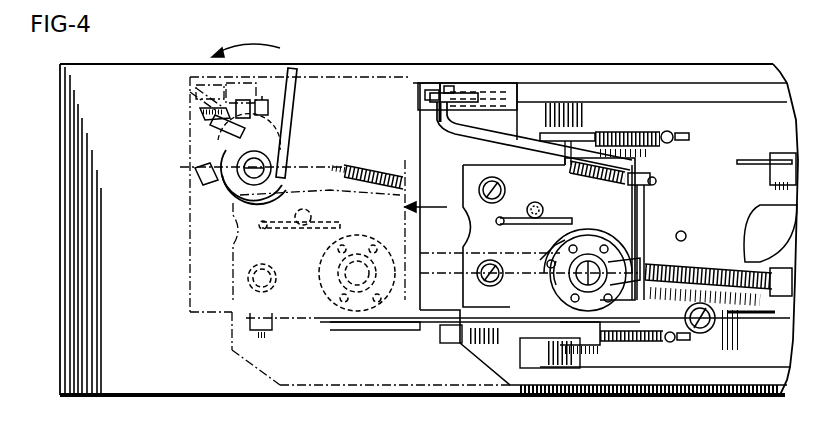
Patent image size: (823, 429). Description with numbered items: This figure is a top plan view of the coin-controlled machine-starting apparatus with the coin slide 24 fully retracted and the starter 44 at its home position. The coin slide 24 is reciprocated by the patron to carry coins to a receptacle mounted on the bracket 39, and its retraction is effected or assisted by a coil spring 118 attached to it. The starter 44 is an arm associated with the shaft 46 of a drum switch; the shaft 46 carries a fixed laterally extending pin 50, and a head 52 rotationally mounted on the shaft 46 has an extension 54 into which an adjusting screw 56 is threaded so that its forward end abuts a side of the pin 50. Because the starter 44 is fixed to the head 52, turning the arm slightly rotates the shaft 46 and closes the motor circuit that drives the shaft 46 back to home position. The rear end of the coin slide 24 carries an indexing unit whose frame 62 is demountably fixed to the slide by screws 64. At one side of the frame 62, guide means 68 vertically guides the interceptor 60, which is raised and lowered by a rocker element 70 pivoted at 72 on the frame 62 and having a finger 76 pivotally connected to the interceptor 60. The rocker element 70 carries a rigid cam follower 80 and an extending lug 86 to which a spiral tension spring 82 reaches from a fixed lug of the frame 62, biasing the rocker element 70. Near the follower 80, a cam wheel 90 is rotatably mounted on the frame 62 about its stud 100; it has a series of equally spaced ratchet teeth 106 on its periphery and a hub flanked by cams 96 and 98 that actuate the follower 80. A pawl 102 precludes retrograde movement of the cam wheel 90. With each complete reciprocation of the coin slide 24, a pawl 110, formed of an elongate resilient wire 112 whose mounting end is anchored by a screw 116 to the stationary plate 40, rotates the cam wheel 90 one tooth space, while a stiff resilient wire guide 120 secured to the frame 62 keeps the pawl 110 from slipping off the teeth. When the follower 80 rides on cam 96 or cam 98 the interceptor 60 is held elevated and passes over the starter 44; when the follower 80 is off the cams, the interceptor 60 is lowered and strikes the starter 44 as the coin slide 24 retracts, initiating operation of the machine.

The coin slide 24 is at (495, 365).
The bracket 39 is at (234, 386).
The plate 40 is at (722, 103).
The starter 44 is at (300, 72).
The shaft 46 is at (243, 178).
The pin 50 is at (262, 102).
The head 52 is at (247, 182).
The extension 54 is at (245, 102).
The adjusting screw 56 is at (245, 118).
The interceptor 60 is at (432, 90).
The frame 62 is at (420, 125).
The screws 64 is at (478, 189).
The guide means 68 is at (425, 95).
The rocker element 70 is at (520, 140).
The pivot 72 is at (676, 137).
The finger 76 is at (447, 86).
The cam follower 80 is at (645, 286).
The spiral tension spring 82 is at (368, 163).
The lug 86 is at (656, 181).
The cam wheel 90 is at (556, 251).
The cam 96 is at (592, 226).
The cam 98 is at (585, 330).
The stud 100 is at (620, 255).
The pawl 102 is at (548, 210).
The ratchet teeth 106 is at (642, 228).
The pawl 110 is at (323, 322).
The resilient wire 112 is at (437, 322).
The screw 116 is at (720, 320).
The coil spring 118 is at (713, 258).
The guide 120 is at (398, 340).